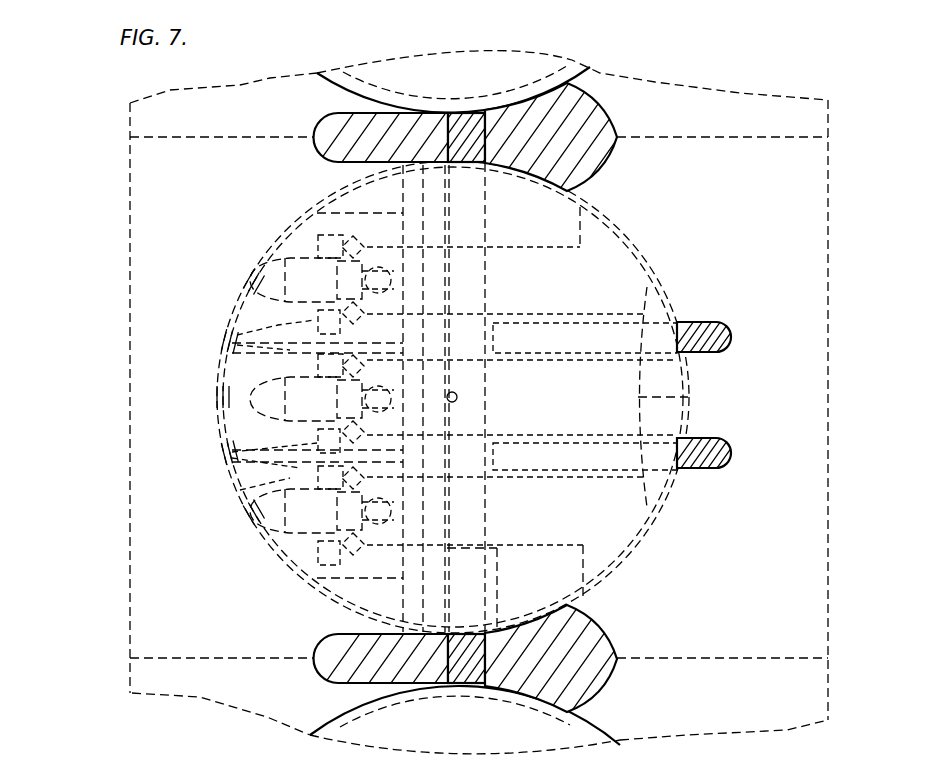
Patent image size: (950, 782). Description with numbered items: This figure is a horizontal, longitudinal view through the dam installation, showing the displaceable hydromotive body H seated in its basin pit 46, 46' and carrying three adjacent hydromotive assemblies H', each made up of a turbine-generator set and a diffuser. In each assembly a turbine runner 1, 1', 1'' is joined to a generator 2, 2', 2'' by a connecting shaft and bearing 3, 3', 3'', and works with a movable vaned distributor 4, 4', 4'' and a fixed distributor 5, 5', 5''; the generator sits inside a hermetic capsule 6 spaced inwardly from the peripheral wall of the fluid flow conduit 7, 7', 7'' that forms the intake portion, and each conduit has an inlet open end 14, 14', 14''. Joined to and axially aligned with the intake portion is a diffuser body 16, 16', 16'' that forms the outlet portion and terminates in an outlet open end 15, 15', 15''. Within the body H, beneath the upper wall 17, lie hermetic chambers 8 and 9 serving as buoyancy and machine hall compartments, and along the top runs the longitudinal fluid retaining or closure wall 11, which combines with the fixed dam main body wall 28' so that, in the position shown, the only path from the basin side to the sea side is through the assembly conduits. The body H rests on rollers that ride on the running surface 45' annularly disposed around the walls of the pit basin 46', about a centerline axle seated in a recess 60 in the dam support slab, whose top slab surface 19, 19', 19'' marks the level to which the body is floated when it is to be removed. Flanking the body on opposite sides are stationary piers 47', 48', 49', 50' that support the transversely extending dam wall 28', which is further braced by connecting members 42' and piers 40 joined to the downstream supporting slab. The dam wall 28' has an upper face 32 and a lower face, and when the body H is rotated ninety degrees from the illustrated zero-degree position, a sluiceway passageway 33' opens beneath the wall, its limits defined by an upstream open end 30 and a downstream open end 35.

The turbine runner 1 is at (378, 399).
The turbine runner 1' is at (378, 511).
The turbine runner 1'' is at (378, 280).
The generator 2 is at (293, 399).
The generator 2' is at (293, 511).
The generator 2'' is at (293, 280).
The connecting shaft and bearing 3 is at (350, 399).
The connecting shaft and bearing 3' is at (350, 511).
The connecting shaft and bearing 3'' is at (350, 280).
The movable vaned distributor 4 is at (335, 444).
The movable vaned distributor 4' is at (332, 560).
The movable vaned distributor 4'' is at (339, 327).
The fixed distributor 5 is at (330, 367).
The fixed distributor 5' is at (315, 479).
The fixed distributor 5'' is at (317, 245).
The hermetic capsule 6 is at (264, 383).
The fluid flow conduit 7 is at (274, 444).
The fluid flow conduit 7' is at (265, 483).
The fluid flow conduit 7'' is at (276, 327).
The hermetic chamber 8 is at (451, 398).
The hermetic chamber 9 is at (382, 392).
The fluid retaining or closure wall 11 is at (445, 228).
The inlet open end 14 is at (192, 369).
The inlet open end 14' is at (220, 498).
The inlet open end 14'' is at (213, 295).
The outlet open end 15 is at (724, 382).
The outlet open end 15' is at (694, 527).
The outlet open end 15'' is at (687, 255).
The diffuser body 16 is at (623, 397).
The diffuser body 16' is at (566, 547).
The diffuser body 16'' is at (580, 243).
The upper wall 17 is at (608, 214).
The top slab surface 19 is at (479, 410).
The top slab surface 19' is at (223, 95).
The top slab surface 19'' is at (480, 706).
The dam main body wall 28' is at (522, 398).
The upstream open end 30 is at (413, 610).
The upper face 32 is at (479, 144).
The passageway 33' is at (472, 590).
The downstream open end 35 is at (502, 557).
The pier 40 is at (716, 348).
The connecting member 42' is at (585, 396).
The running surface 45' is at (465, 405).
The basin pit 46 is at (658, 563).
The basin pit 46' is at (569, 402).
The stationary pier 47' is at (405, 137).
The stationary pier 48' is at (561, 140).
The stationary pier 49' is at (406, 660).
The stationary pier 50' is at (574, 660).
The recess 60 is at (472, 388).
The hydromotive body H is at (480, 397).
The hydromotive assembly H' is at (214, 397).